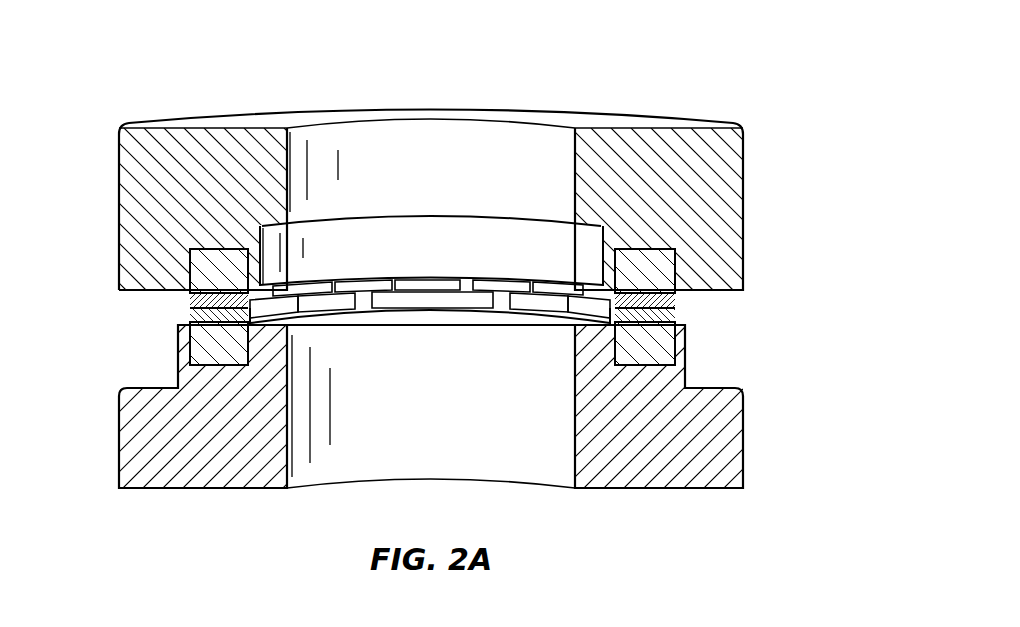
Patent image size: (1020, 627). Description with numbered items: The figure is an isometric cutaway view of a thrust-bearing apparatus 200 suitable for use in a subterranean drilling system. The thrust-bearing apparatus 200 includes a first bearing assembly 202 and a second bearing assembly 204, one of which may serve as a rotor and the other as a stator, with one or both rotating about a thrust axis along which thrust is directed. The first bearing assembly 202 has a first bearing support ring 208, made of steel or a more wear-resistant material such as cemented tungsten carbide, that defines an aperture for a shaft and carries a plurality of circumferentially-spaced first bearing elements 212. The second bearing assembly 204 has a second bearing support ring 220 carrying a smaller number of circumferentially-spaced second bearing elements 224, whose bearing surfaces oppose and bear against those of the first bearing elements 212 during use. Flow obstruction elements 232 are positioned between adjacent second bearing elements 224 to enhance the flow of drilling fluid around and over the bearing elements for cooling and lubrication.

The thrust-bearing apparatus 200 is at (783, 98).
The first bearing assembly 202 is at (765, 188).
The second bearing assembly 204 is at (763, 443).
The first bearing support ring 208 is at (148, 168).
The first bearing elements 212 is at (480, 283).
The second bearing support ring 220 is at (140, 448).
The second bearing elements 224 is at (537, 304).
The flow obstruction elements 232 is at (425, 305).